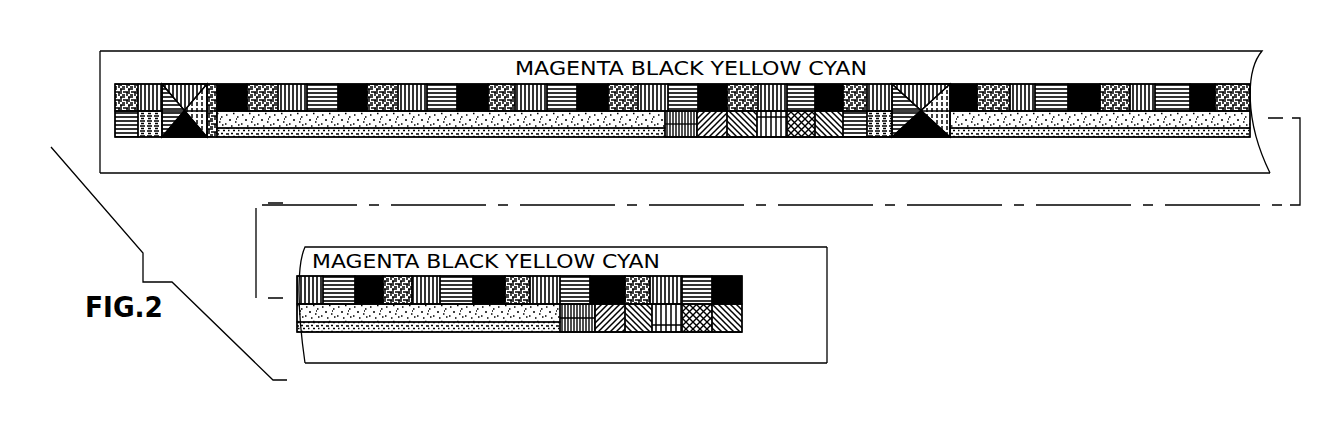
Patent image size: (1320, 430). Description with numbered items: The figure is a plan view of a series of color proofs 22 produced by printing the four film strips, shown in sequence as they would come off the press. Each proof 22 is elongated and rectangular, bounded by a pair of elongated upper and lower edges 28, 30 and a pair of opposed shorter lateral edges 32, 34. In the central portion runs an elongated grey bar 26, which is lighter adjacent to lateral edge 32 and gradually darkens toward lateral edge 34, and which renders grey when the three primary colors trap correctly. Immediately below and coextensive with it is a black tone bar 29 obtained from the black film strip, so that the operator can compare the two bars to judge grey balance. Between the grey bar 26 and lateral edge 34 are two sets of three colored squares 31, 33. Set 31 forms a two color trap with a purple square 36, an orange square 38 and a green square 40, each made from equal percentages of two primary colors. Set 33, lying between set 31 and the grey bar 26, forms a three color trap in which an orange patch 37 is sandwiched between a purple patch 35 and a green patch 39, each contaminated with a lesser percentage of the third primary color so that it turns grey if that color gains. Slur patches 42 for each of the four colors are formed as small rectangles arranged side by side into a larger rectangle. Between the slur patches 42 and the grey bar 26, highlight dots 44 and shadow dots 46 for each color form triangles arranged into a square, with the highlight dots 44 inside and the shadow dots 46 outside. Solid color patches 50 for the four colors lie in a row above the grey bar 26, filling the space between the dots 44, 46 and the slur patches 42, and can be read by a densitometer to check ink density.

The color proof 22 is at (1098, 230).
The grey bar 26 is at (253, 122).
The upper edge 28 is at (400, 51).
The black tone bar 29 is at (303, 133).
The lower edge 30 is at (710, 173).
The set of three colored squares 31 is at (826, 147).
The lateral edge 32 is at (100, 93).
The set of patches 33 is at (684, 143).
The lateral edge 34 is at (828, 302).
The purple patch 35 is at (677, 127).
The purple square 36 is at (766, 137).
The orange patch 37 is at (713, 137).
The orange square 38 is at (796, 137).
The green patch 39 is at (731, 137).
The green square 40 is at (877, 143).
The slur patches 42 is at (140, 82).
The highlight dot 44 is at (185, 100).
The shadow dot 46 is at (200, 110).
The solid color patches 50 is at (410, 88).